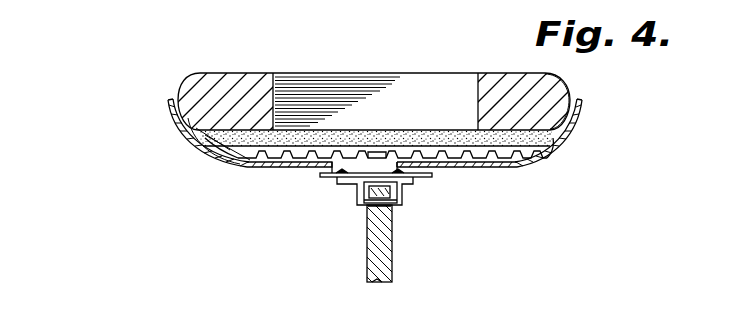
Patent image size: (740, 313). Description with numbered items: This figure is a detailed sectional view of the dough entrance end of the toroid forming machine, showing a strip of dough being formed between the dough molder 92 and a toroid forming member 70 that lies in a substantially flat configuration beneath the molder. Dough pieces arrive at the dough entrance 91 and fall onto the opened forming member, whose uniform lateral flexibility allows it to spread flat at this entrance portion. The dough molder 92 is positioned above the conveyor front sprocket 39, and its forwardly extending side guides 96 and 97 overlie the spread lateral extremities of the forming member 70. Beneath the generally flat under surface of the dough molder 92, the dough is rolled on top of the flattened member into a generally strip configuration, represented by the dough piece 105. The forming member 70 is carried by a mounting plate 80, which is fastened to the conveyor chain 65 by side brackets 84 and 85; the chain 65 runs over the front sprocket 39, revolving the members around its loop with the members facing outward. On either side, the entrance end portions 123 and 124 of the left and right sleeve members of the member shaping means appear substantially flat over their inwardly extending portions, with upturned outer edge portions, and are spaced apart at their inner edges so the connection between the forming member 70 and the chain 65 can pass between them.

The dough entrance 91 is at (371, 64).
The side guide 97 is at (227, 74).
The side guide 96 is at (509, 72).
The dough molder 92 is at (561, 87).
The toroid forming member 70 is at (564, 128).
The dough piece 105 is at (251, 166).
The entrance end portion 124 is at (192, 141).
The entrance end portion 123 is at (550, 152).
The mounting plate 80 is at (432, 177).
The side bracket 84 is at (358, 193).
The side bracket 85 is at (403, 202).
The front sprocket 39 is at (385, 267).
The chain 65 is at (368, 226).